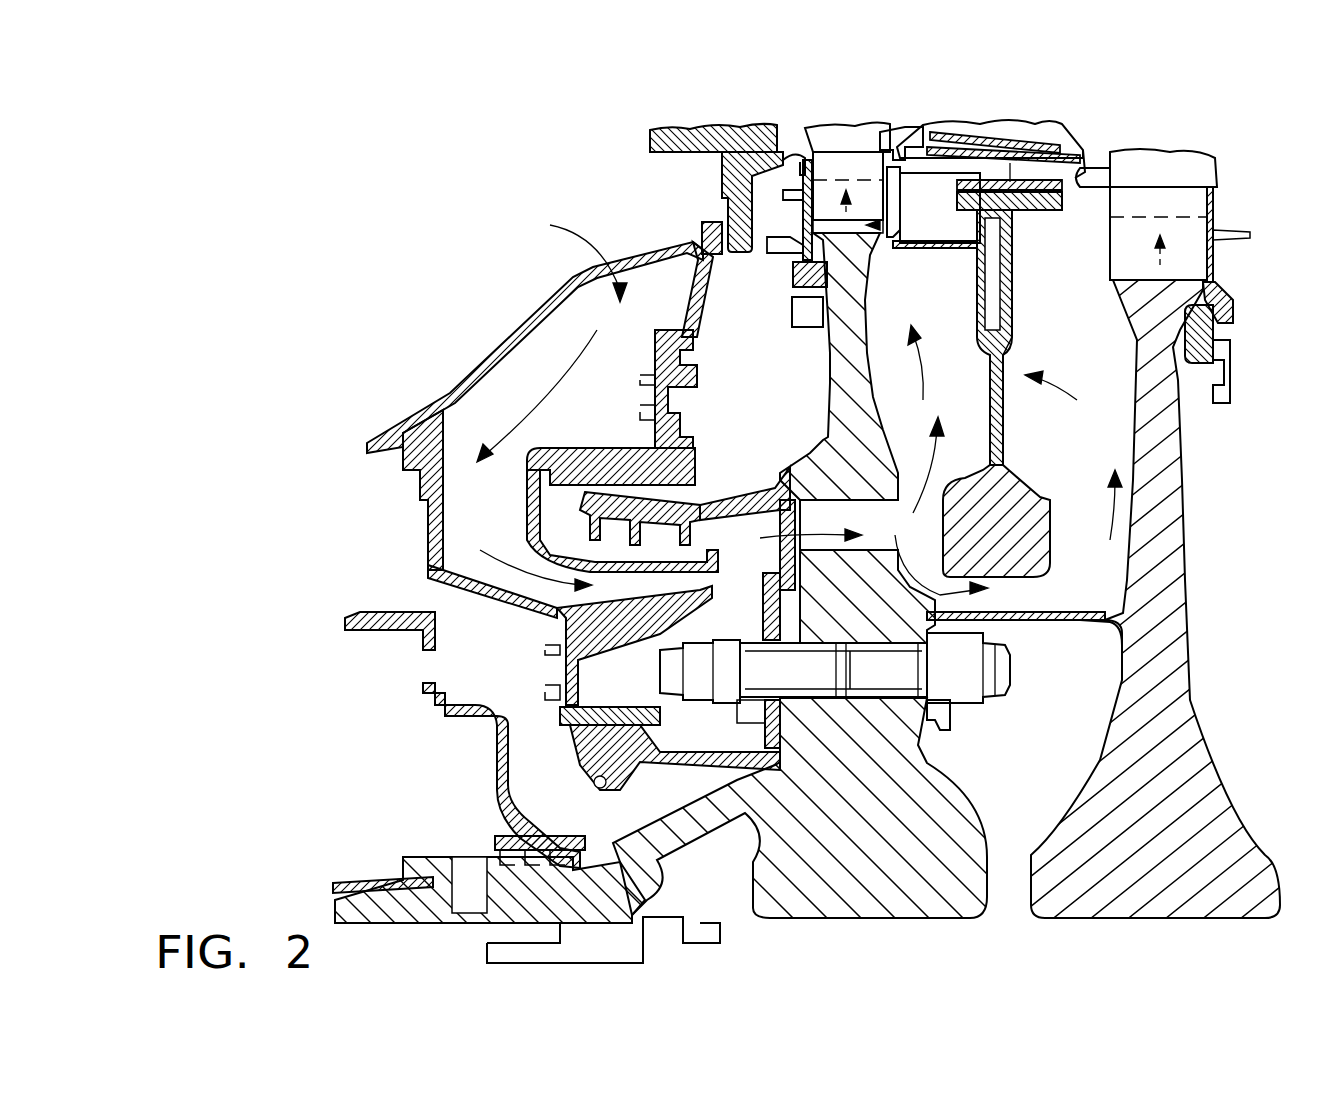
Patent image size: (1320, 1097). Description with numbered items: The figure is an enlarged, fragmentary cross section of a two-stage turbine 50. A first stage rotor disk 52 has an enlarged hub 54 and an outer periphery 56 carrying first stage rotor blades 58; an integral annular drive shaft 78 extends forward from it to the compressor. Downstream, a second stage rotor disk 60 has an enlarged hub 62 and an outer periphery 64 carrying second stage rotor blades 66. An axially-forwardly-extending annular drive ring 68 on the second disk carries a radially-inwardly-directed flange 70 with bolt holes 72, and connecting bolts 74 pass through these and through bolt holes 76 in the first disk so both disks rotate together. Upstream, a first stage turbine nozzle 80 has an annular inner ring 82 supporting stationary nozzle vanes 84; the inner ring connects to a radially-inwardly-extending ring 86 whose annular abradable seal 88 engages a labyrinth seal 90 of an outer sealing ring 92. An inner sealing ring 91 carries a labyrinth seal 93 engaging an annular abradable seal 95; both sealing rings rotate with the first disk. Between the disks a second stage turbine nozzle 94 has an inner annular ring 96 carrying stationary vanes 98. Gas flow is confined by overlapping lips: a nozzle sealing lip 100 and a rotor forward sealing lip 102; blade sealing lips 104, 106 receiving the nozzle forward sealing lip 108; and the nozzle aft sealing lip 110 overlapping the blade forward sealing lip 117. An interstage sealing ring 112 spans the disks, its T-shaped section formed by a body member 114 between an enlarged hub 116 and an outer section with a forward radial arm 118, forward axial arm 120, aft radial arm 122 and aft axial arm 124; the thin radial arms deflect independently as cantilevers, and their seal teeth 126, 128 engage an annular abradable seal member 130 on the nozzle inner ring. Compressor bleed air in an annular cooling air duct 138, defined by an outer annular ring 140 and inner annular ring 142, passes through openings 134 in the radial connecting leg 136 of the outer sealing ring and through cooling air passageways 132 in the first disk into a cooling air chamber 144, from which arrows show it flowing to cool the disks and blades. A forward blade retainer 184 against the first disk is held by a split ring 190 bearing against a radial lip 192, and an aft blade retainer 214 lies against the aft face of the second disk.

The turbine 50 is at (385, 116).
The first stage turbine rotor disk 52 is at (840, 387).
The enlarged hub 54 is at (808, 900).
The outer periphery 56 is at (803, 152).
The first stage rotor blades 58 is at (848, 133).
The second stage turbine rotor disk 60 is at (1165, 490).
The enlarged hub 62 is at (1170, 895).
The outer periphery 64 is at (1212, 215).
The second stage rotor blades 66 is at (1200, 162).
The annular drive ring 68 is at (1100, 640).
The radially-inwardly-directed flange 70 is at (940, 732).
The bolt holes 72 is at (945, 690).
The connecting bolts 74 is at (767, 683).
The bolt holes 76 is at (855, 690).
The annular drive shaft 78 is at (550, 897).
The first stage turbine nozzle 80 is at (610, 108).
The annular inner ring 82 is at (652, 152).
The first stage nozzle vanes 84 is at (653, 133).
The radially-inwardly-extending ring 86 is at (693, 295).
The annular abradable seal 88 is at (605, 458).
The labyrinth seal 90 is at (700, 490).
The inner sealing ring 91 is at (712, 772).
The outer sealing ring 92 is at (780, 493).
The labyrinth seal 93 is at (655, 725).
The second stage turbine nozzle 94 is at (1090, 107).
The annular abradable seal 95 is at (560, 718).
The inner annular ring 96 is at (975, 134).
The second stage nozzle vanes 98 is at (1020, 128).
The sealing lip 100 is at (725, 165).
The forwardly-extending sealing lip 102 is at (777, 135).
The rearwardly-extending sealing lip 104 is at (900, 132).
The rearwardly-extending sealing lip 106 is at (903, 178).
The second stage nozzle forward sealing lip 108 is at (922, 155).
The second stage nozzle aft sealing lip 110 is at (1086, 160).
The interstage sealing ring 112 is at (1008, 483).
The body member 114 is at (1008, 438).
The enlarged hub 116 is at (1015, 512).
The second stage turbine blade forward sealing lip 117 is at (1105, 168).
The forward radial arm 118 is at (975, 300).
The forward axial arm 120 is at (908, 250).
The aft radial arm 122 is at (1015, 320).
The aft axial arm 124 is at (1037, 283).
The seal tooth 126 is at (965, 215).
The seal tooth 128 is at (1018, 212).
The annular abradable seal member 130 is at (1178, 228).
The cooling air passageways 132 is at (875, 565).
The openings 134 is at (782, 560).
The radial connecting leg 136 is at (805, 530).
The annular cooling air duct 138 is at (680, 588).
The outer annular ring 140 is at (778, 525).
The inner annular ring 142 is at (680, 620).
The cooling air chamber 144 is at (1015, 615).
The forward blade retainer 184 is at (800, 255).
The split ring 190 is at (792, 280).
The radial lip 192 is at (793, 318).
The aft blade retainer 214 is at (1235, 298).